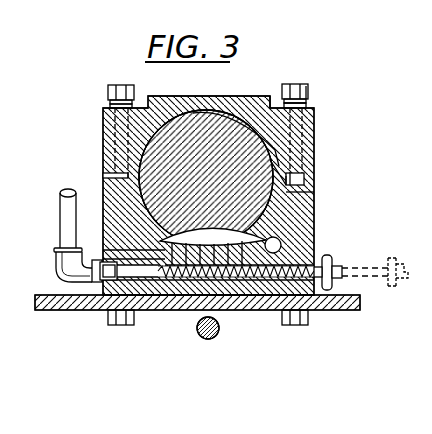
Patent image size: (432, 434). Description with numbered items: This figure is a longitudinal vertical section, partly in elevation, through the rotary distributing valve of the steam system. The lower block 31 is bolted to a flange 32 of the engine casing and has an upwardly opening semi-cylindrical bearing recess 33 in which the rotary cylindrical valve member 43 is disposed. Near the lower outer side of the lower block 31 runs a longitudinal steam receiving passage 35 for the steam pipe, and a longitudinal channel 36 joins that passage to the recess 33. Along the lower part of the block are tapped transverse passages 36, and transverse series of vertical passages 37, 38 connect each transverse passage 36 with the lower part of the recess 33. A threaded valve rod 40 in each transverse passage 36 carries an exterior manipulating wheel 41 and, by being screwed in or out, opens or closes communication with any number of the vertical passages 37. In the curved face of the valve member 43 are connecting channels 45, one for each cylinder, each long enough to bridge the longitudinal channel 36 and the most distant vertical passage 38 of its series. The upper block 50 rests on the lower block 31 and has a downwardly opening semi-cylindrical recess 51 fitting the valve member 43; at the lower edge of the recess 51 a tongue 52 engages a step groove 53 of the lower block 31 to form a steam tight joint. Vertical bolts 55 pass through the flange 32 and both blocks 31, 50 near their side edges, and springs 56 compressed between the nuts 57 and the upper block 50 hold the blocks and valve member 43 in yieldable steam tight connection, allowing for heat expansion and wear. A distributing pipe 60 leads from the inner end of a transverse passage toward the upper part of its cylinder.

The lower block 31 is at (314, 214).
The flange 32 is at (314, 312).
The bearing recess 33 is at (314, 198).
The steam receiving passage 35 is at (318, 228).
The transverse passage 36 is at (147, 270).
The vertical passage 37 is at (281, 245).
The vertical passage 38 is at (106, 250).
The threaded valve rod 40 is at (327, 292).
The manipulating wheel 41 is at (333, 290).
The rotary cylindrical valve member 43 is at (232, 108).
The connecting channel 45 is at (276, 150).
The upper block 50 is at (103, 118).
The recess 51 is at (314, 125).
The tongue 52 is at (286, 172).
The step groove 53 is at (304, 180).
The vertical bolt 55 is at (296, 83).
The spring 56 is at (306, 104).
The nut 57 is at (306, 86).
The distributing pipe 60 is at (60, 262).